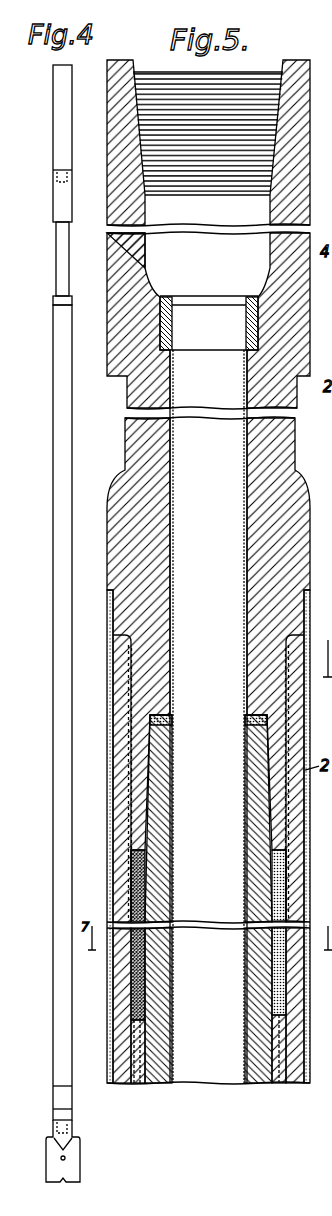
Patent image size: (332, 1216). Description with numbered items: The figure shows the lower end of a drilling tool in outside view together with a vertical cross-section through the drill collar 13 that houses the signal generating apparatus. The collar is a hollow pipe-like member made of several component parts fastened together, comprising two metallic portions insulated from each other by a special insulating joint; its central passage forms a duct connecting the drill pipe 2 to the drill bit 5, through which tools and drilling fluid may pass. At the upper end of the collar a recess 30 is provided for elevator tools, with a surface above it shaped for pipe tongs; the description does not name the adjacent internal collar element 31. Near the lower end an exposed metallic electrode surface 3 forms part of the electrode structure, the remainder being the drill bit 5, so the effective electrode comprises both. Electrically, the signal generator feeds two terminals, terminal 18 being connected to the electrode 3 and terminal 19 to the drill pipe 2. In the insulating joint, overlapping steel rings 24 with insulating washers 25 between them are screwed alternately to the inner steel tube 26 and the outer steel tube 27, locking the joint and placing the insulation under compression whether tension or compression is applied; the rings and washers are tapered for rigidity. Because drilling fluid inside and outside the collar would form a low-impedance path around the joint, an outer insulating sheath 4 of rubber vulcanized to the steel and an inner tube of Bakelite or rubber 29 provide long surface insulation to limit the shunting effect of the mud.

In FIG. 4, the drill pipe 2 is at (54, 123).
In FIG. 4, the drill collar 13 is at (49, 178).
In FIG. 4, the recess 30 is at (53, 223).
In FIG. 5, the recess 30 is at (121, 378).
In FIG. 4, the terminal 19 is at (49, 311).
In FIG. 4, the insulating sheath 4 is at (58, 740).
In FIG. 5, the insulating sheath 4 is at (108, 603).
In FIG. 4, the electrode surface 3 is at (53, 1094).
In FIG. 4, the terminal 18 is at (78, 1093).
In FIG. 4, the drill bit 5 is at (73, 1166).
In FIG. 5, the inner collar 31 is at (183, 326).
In FIG. 5, the tube of Bakelite or rubber 29 is at (245, 579).
In FIG. 5, the outer steel tube 27 is at (131, 872).
In FIG. 5, the inner steel tube 26 is at (271, 889).
In FIG. 5, the overlapping steel rings 24 is at (147, 950).
In FIG. 5, the insulating washers 25 is at (270, 938).